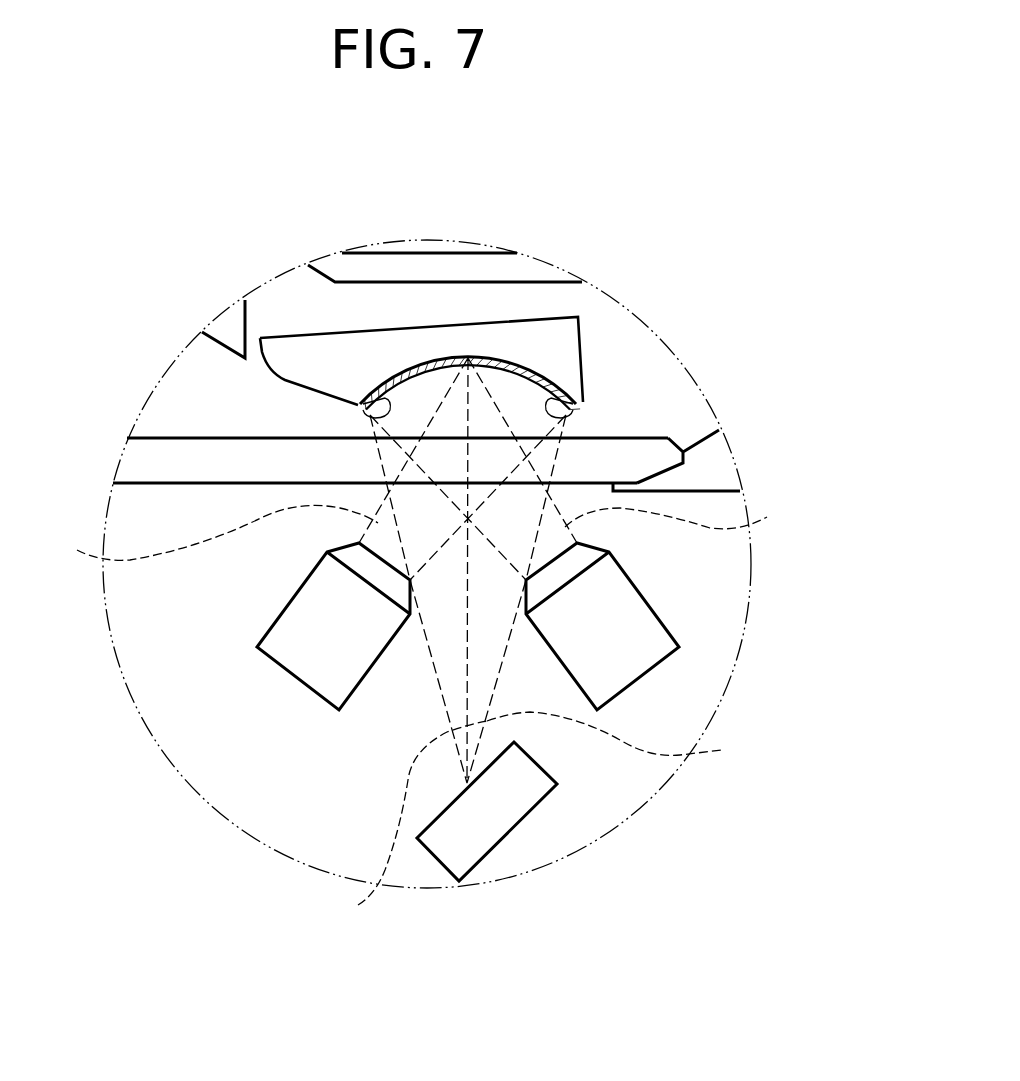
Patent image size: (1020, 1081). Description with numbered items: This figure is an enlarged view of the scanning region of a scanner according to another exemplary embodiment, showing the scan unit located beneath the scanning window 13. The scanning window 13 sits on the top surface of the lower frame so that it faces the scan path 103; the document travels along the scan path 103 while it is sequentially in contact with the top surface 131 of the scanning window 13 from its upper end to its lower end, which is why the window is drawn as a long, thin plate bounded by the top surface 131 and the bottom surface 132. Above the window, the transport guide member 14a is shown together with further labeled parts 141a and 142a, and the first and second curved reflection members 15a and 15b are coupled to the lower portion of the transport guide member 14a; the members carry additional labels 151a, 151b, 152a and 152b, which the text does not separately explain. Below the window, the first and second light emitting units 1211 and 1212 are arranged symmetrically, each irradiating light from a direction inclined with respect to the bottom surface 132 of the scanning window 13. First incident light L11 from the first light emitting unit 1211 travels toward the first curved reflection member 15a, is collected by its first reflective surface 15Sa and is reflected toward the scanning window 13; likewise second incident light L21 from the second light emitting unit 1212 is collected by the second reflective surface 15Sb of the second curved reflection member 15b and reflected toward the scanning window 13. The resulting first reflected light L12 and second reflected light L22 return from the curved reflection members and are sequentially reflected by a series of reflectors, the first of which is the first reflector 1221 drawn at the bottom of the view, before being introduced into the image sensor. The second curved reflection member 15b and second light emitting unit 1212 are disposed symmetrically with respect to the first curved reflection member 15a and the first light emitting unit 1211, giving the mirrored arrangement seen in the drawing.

The scanning window 13 is at (391, 458).
The top surface 131 is at (140, 438).
The bottom surface 132 is at (112, 484).
The scan path 103 is at (343, 424).
The transport guide member 14a is at (245, 300).
The housing upper member 141a is at (392, 402).
The housing inner surface 142a is at (539, 372).
The first curved reflection member 15a is at (443, 310).
The second curved reflection member 15b is at (566, 368).
The lens first surface 151a is at (360, 410).
The lens second surface 151b is at (472, 357).
The lens coating layer 152a is at (447, 356).
The lens coating layer portion 152b is at (580, 410).
The first reflective surface 15Sa is at (362, 408).
The second reflective surface 15Sb is at (580, 417).
The first light emitting unit 1211 is at (668, 628).
The second light emitting unit 1212 is at (272, 660).
The first reflector 1221 is at (512, 833).
The first incident light L11 is at (689, 519).
The first reflected light L12 is at (401, 823).
The second incident light L21 is at (206, 535).
The second reflected light L22 is at (627, 736).